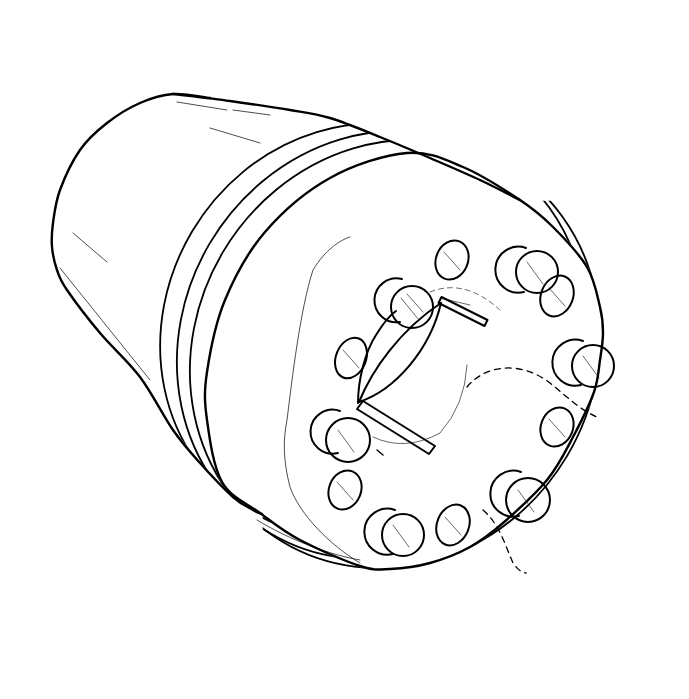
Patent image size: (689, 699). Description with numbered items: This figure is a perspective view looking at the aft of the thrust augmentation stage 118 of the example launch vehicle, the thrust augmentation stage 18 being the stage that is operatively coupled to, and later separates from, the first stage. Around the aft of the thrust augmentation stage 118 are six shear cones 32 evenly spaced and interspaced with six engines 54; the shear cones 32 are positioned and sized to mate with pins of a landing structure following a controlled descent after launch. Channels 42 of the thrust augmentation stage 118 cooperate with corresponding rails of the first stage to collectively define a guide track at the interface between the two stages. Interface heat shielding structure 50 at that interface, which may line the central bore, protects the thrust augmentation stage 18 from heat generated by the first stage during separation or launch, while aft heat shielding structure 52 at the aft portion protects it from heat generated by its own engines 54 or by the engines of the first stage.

The thrust augmentation stage 118 is at (565, 61).
The thrust augmentation stage 18 is at (530, 133).
The engines 54 is at (411, 293).
The shear cones 32 is at (466, 254).
The channels 42 is at (462, 312).
The interface heat shielding structure 50 is at (597, 417).
The aft heat shielding structure 52 is at (526, 573).